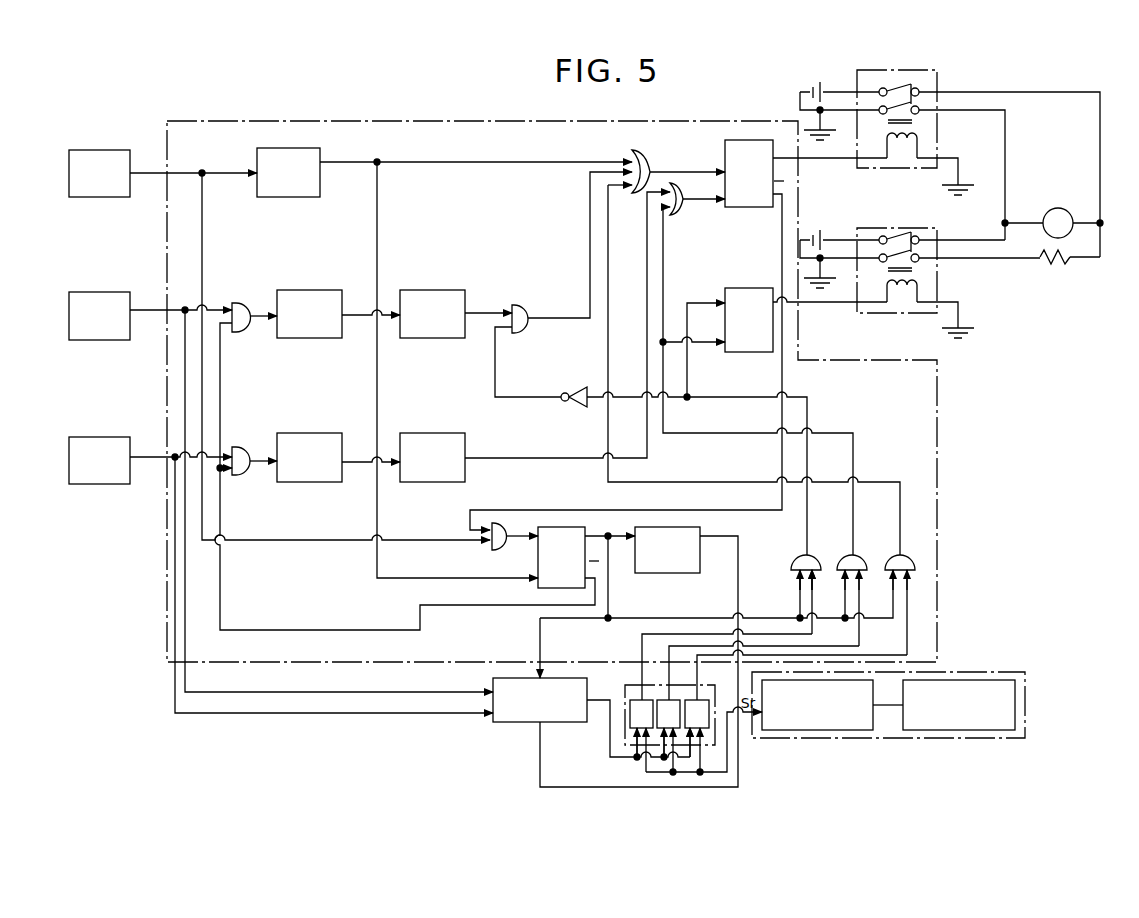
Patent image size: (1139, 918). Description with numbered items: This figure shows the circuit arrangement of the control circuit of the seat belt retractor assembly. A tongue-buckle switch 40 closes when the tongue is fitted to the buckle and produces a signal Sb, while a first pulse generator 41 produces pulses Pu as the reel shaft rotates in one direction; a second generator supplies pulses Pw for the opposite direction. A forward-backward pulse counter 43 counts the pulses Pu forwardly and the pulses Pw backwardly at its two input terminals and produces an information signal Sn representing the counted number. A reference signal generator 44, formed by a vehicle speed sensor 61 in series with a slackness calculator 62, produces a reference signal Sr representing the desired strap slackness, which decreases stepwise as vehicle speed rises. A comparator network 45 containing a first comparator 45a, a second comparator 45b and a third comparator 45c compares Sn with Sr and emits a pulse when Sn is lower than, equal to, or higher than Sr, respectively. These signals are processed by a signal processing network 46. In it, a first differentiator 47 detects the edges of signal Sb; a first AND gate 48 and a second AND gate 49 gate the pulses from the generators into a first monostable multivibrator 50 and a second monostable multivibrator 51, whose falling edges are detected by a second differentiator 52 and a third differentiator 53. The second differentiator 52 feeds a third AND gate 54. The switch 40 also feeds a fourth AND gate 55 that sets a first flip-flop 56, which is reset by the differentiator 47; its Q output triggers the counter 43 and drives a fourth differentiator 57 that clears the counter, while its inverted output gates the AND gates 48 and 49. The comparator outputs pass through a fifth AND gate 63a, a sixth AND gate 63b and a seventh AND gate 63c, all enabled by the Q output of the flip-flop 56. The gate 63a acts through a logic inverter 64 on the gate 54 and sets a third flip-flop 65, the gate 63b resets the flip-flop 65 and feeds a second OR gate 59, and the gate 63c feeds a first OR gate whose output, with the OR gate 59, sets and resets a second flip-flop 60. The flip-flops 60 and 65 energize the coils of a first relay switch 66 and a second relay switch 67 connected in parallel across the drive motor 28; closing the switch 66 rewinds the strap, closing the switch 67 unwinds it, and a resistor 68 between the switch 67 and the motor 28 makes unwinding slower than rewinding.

The drive motor 28 is at (1059, 208).
The tongue-buckle switch 40 is at (100, 197).
The first pulse generator 41 is at (100, 340).
The forward-backward pulse counter 43 is at (507, 722).
The reference signal generator 44 is at (970, 672).
The comparator network 45 is at (100, 484).
The first comparator 45a is at (630, 708).
The second comparator 45b is at (667, 700).
The third comparator 45c is at (709, 703).
The signal processing network 46 is at (427, 121).
The first differentiator 47 is at (290, 197).
The first two-input logic AND gate circuit 48 is at (240, 303).
The second two-input logic AND gate circuit 49 is at (240, 447).
The first monostable multivibrator 50 is at (310, 338).
The second monostable multivibrator 51 is at (310, 482).
The second differentiator 52 is at (430, 338).
The third differentiator 53 is at (430, 482).
The third two-input logic AND gate circuit 54 is at (529, 307).
The fourth two-input logic AND gate circuit 55 is at (487, 547).
The first flip-flop circuit 56 is at (537, 558).
The fourth differentiator 57 is at (668, 573).
The second two-input logic OR gate circuit 59 is at (679, 216).
The second flip-flop circuit 60 is at (752, 207).
The vehicle speed sensor 61 is at (965, 730).
The slackness calculator 62 is at (835, 730).
The fifth two-input logic AND gate circuit 63a is at (791, 557).
The sixth two-input logic AND gate circuit 63b is at (840, 556).
The seventh two-input logic AND gate circuit 63c is at (888, 556).
The logic inverter 64 is at (576, 407).
The third flip-flop circuit 65 is at (748, 352).
The first relay switch 66 is at (912, 70).
The second relay switch 67 is at (880, 228).
The resistor 68 is at (1056, 264).